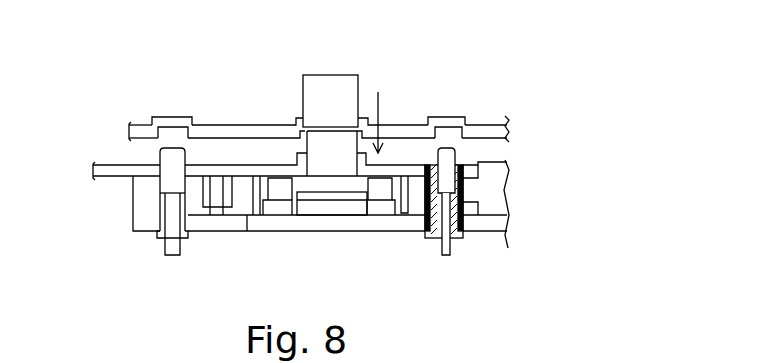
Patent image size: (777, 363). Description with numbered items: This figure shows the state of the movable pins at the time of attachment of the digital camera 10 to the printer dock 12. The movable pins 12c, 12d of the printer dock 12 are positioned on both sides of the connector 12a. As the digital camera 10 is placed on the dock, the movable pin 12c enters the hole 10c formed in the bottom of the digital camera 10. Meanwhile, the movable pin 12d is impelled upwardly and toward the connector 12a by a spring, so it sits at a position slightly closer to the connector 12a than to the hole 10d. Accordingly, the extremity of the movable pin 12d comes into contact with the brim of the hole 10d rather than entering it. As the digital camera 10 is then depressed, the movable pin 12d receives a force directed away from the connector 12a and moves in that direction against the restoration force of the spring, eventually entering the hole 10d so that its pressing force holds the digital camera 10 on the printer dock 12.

The digital camera 10 is at (395, 95).
The hole 10c is at (180, 137).
The hole 10d is at (470, 99).
The printer dock 12 is at (341, 184).
The connector 12a is at (320, 148).
The movable pin 12c is at (163, 157).
The movable pin 12d is at (443, 183).